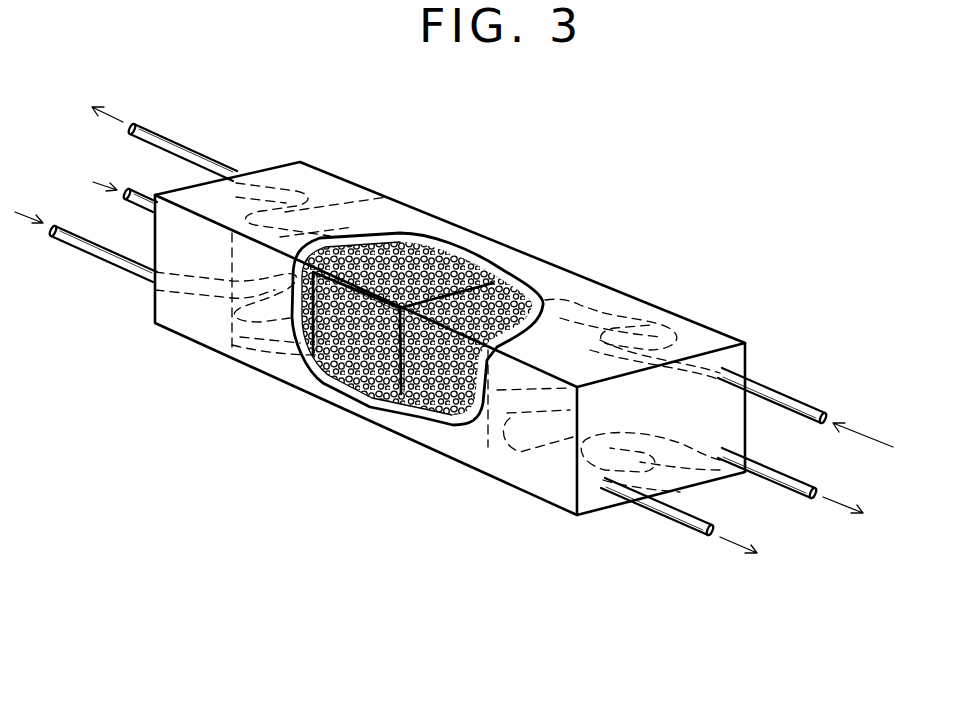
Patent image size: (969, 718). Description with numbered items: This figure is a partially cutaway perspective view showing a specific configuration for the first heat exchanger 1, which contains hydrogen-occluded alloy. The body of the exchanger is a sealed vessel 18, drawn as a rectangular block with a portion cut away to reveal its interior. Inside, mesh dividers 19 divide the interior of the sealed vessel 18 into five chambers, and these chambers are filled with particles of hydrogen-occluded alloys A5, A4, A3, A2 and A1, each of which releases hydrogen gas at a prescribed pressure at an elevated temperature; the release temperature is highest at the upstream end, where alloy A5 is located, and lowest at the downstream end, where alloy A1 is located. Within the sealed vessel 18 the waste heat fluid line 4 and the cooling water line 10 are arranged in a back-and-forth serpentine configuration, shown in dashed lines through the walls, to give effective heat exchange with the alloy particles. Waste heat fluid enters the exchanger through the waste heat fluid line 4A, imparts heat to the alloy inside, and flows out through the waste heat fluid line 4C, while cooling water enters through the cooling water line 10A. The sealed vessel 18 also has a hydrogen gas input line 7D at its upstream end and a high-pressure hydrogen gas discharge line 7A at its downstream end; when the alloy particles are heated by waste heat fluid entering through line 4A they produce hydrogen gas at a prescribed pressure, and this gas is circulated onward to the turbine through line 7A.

The first heat exchanger 1 is at (343, 412).
The waste heat fluid line 4 is at (523, 450).
The waste heat fluid line 4A is at (92, 260).
The waste heat fluid line 4C is at (660, 520).
The high-pressure hydrogen gas discharge line 7A is at (787, 497).
The hydrogen gas input line 7D is at (125, 208).
The cooling water line 10 is at (663, 311).
The cooling water line 10A is at (192, 148).
The sealed vessel 18 is at (517, 263).
The mesh dividers 19 is at (380, 233).
The hydrogen-occluded alloy A1 is at (540, 485).
The hydrogen-occluded alloy A2 is at (448, 420).
The hydrogen-occluded alloy A3 is at (370, 397).
The hydrogen-occluded alloy A4 is at (277, 360).
The hydrogen-occluded alloy A5 is at (202, 323).